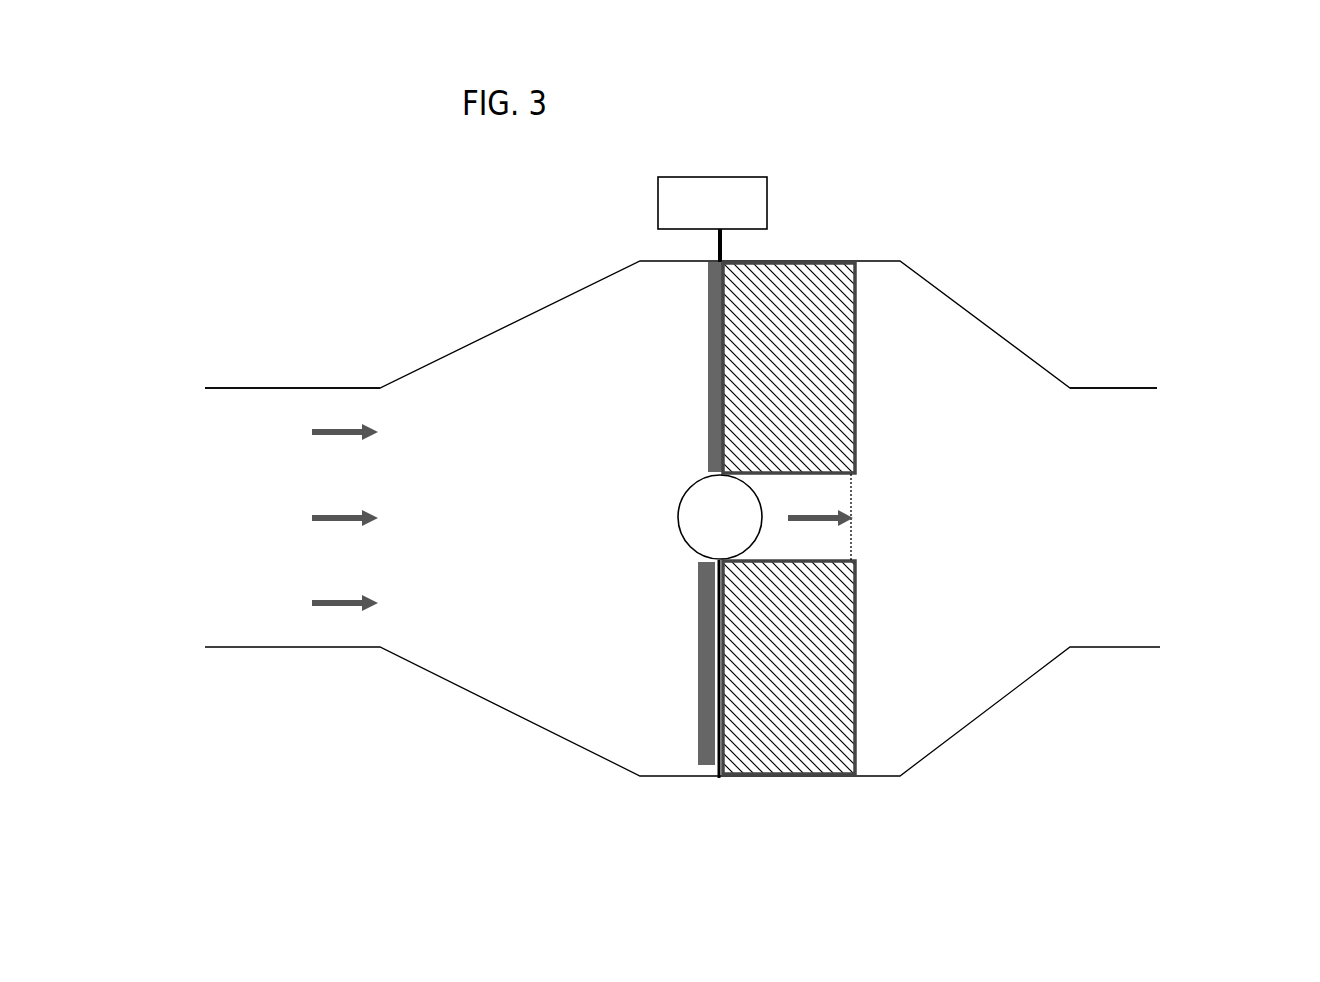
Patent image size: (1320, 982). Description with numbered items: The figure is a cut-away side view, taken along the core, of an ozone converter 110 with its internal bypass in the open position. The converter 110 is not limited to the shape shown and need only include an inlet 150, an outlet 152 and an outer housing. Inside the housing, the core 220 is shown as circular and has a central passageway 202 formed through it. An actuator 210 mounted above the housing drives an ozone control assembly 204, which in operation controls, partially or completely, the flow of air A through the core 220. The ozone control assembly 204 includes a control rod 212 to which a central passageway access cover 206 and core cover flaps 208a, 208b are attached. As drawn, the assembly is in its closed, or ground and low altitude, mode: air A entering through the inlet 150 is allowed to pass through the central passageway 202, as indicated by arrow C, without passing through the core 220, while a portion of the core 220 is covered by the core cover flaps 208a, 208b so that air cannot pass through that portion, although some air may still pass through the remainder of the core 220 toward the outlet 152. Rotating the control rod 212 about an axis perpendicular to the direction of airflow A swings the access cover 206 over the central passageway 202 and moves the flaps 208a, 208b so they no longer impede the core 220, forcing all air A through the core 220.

The ozone converter 110 is at (414, 296).
The inlet 150 is at (268, 392).
The outlet 152 is at (1125, 388).
The flow of air A is at (360, 518).
The arrow C is at (828, 514).
The central passageway 202 is at (828, 540).
The ozone control assembly 204 is at (767, 518).
The central passageway access cover 206 is at (684, 540).
The core cover flap 208a is at (705, 362).
The core cover flap 208b is at (697, 690).
The actuator 210 is at (733, 175).
The control rod 212 is at (722, 244).
The core 220 is at (858, 346).